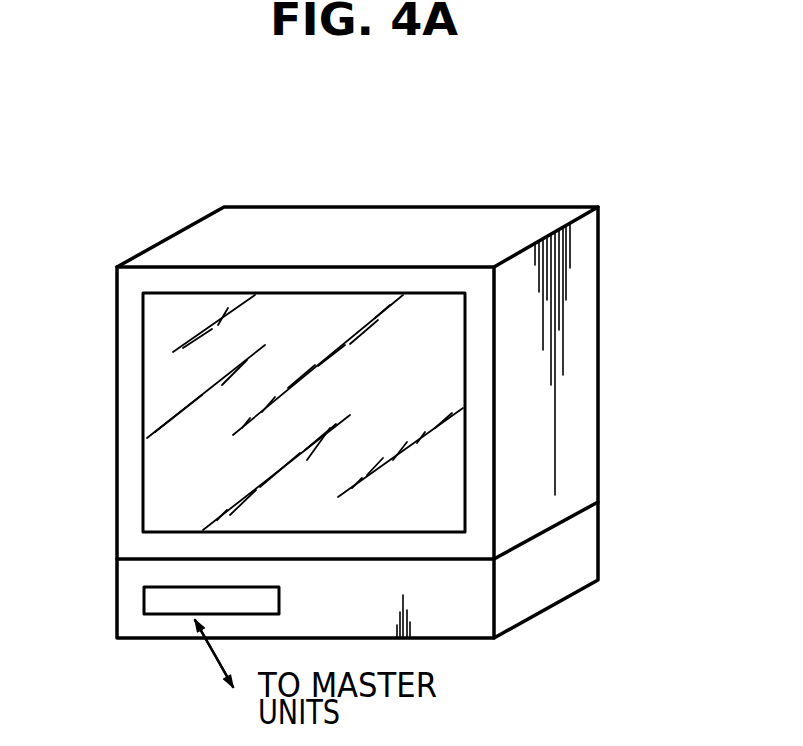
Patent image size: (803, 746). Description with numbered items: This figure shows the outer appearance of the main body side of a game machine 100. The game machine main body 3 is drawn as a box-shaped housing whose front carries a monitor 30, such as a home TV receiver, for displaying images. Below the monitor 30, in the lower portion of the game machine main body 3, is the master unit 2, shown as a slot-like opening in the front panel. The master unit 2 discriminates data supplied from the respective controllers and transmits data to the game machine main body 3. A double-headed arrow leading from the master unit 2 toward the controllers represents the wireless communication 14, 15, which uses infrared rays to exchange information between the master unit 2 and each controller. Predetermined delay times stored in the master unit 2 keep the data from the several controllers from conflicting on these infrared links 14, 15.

The game machine 100 is at (532, 185).
The monitor 30 is at (153, 360).
The game machine main body 3 is at (580, 548).
The master unit 2 is at (145, 600).
The wireless communication 14 is at (213, 660).
The wireless communication 15 is at (213, 660).